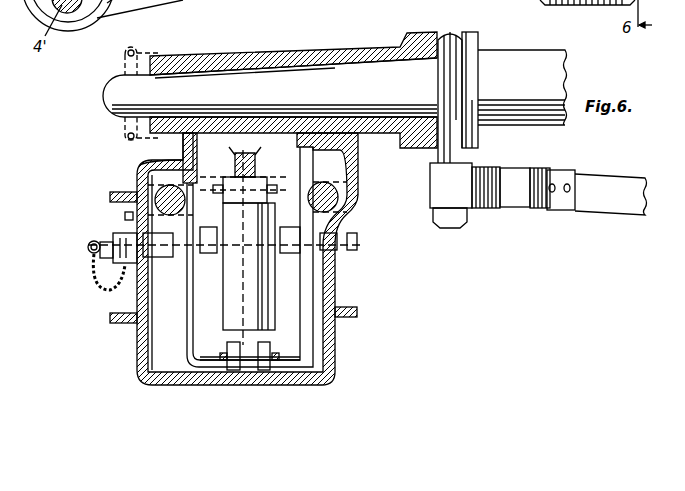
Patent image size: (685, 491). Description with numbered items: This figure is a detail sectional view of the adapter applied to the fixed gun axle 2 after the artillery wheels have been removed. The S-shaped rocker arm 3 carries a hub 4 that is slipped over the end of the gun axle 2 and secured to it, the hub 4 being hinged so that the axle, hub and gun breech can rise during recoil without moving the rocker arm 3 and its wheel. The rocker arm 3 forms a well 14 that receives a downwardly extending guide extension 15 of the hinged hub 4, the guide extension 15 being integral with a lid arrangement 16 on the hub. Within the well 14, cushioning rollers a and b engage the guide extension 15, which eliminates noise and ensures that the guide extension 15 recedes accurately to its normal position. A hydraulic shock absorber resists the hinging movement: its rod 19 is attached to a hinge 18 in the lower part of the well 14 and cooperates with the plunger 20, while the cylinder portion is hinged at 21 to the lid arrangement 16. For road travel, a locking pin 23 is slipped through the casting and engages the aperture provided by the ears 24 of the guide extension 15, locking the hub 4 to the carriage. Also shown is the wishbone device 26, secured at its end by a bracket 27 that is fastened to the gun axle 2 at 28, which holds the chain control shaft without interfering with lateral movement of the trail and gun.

The gun axle 2 is at (502, 58).
The S-shaped rocker arm 3 is at (340, 290).
The hub 4 is at (292, 55).
The well 14 is at (322, 342).
The guide extension 15 is at (190, 322).
The lid arrangement 16 is at (148, 168).
The hinge 18 is at (272, 352).
The rod 19 is at (240, 338).
The plunger 20 is at (217, 273).
The hinge of shock absorber cylinder 21 is at (262, 177).
The locking pin 23 is at (107, 240).
The ears 24 is at (292, 260).
The wishbone device 26 is at (607, 213).
The bracket 27 is at (520, 198).
The fastening of bracket to axle 28 is at (448, 30).
The cushioning roller a is at (140, 192).
The cushioning roller b is at (333, 192).